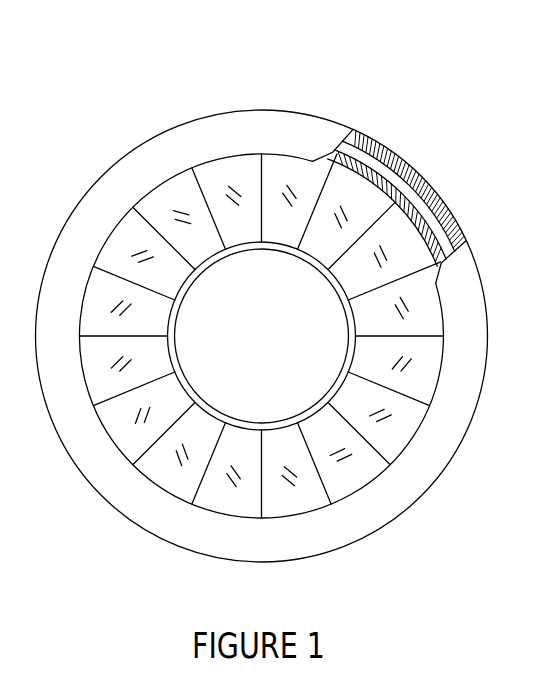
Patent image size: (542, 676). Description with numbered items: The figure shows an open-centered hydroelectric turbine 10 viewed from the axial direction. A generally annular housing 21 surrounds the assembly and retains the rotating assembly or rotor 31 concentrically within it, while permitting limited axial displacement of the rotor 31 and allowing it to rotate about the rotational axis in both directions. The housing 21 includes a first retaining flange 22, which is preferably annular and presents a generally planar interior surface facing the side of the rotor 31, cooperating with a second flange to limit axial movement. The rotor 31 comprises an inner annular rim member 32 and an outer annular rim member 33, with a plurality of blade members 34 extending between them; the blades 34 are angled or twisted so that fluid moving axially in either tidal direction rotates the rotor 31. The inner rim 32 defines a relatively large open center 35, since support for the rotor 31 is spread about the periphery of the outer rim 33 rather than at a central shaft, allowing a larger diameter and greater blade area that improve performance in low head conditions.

The open-centered hydroelectric turbine 10 is at (65, 165).
The annular housing 21 is at (386, 145).
The first retaining flange 22 is at (280, 125).
The rotor 31 is at (133, 418).
The inner annular rim member 32 is at (323, 268).
The outer annular rim member 33 is at (411, 207).
The blade members 34 is at (388, 445).
The open center 35 is at (262, 336).